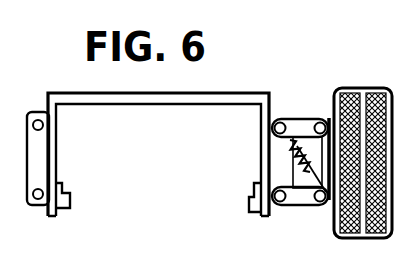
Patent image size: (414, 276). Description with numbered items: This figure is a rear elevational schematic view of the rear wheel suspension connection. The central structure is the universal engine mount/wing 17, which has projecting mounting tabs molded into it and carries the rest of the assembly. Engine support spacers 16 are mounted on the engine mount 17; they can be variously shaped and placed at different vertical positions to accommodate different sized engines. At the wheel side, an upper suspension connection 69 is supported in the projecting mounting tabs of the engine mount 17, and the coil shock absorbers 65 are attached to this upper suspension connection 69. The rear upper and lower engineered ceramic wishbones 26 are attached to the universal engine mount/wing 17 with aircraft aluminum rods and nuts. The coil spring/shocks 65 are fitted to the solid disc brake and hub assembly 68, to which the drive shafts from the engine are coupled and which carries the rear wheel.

The engine support spacer 16 is at (70, 207).
The universal engine mount/wing 17 is at (182, 93).
The rear upper and lower engineered ceramic wishbones 26 is at (305, 122).
The coil shock absorber 65 is at (301, 175).
The disc brake and hub assembly 68 is at (313, 205).
The upper suspension connection 69 is at (292, 120).